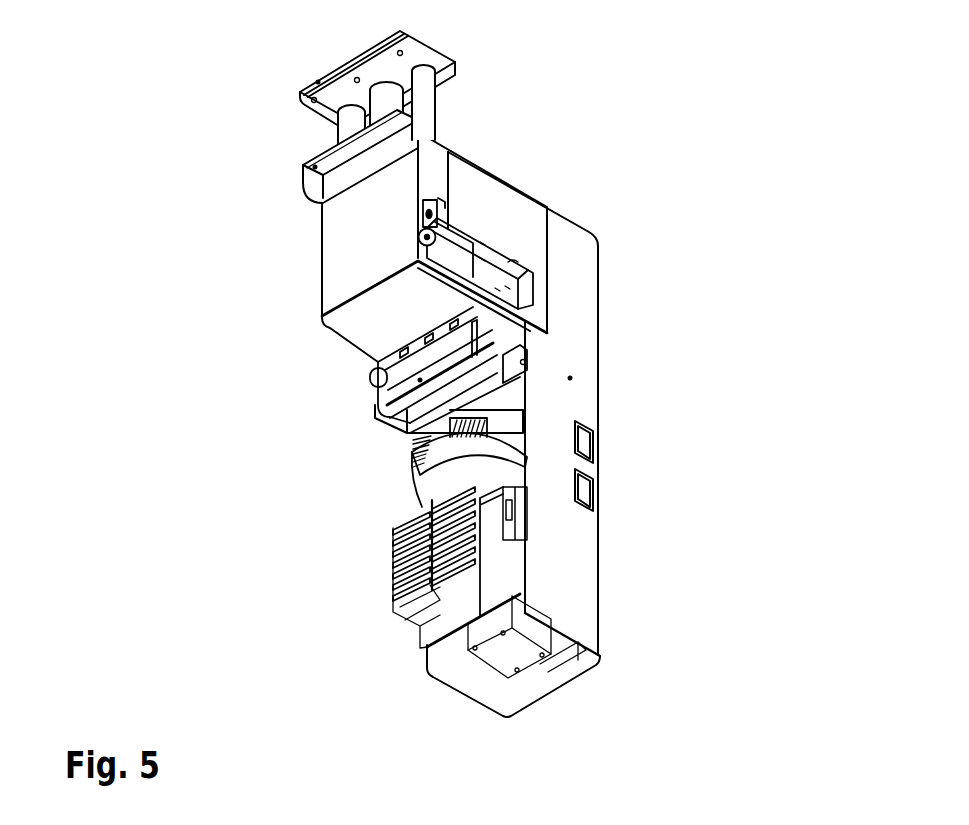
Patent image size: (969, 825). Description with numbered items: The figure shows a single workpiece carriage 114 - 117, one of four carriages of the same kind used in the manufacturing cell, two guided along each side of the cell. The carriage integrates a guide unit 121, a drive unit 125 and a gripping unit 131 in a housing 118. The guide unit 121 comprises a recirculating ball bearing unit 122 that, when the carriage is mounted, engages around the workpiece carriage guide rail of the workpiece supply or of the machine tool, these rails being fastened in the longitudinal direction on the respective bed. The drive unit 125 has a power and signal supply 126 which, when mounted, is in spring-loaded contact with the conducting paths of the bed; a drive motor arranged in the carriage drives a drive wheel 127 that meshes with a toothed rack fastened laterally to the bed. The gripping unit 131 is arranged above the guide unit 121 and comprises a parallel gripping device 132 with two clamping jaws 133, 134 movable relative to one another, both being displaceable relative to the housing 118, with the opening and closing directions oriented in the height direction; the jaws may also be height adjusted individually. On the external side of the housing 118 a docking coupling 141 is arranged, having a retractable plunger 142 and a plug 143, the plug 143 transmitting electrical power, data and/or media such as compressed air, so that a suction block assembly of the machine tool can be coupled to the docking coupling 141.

The workpiece carriage 114 - 117 is at (577, 193).
The housing 118 is at (570, 378).
The guide unit 121 is at (362, 416).
The recirculating ball bearing unit 122 is at (420, 380).
The drive unit 125 is at (390, 506).
The power and signal supply 126 is at (395, 565).
The drive wheel 127 is at (410, 455).
The gripping unit 131 is at (300, 117).
The parallel gripping device 132 is at (452, 103).
The clamping jaw 133 is at (318, 82).
The clamping jaw 134 is at (315, 167).
The docking coupling 141 is at (540, 281).
The retractable plunger 142 is at (428, 236).
The plug 143 is at (428, 215).